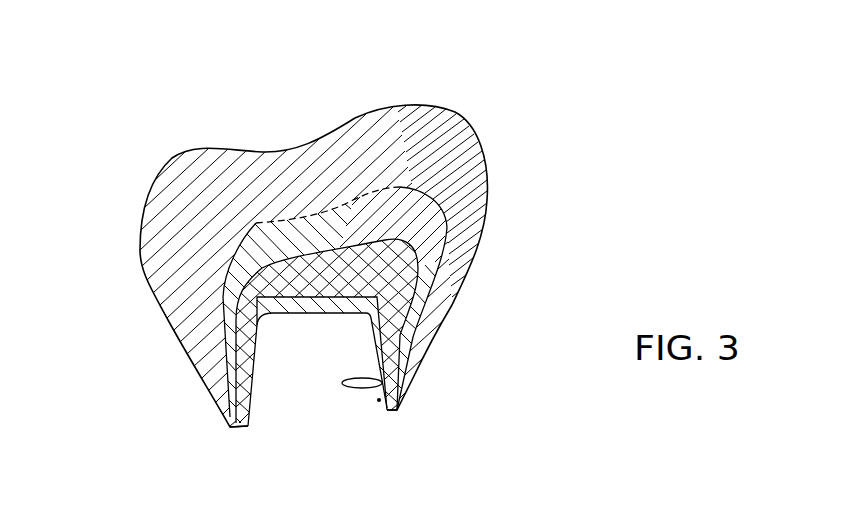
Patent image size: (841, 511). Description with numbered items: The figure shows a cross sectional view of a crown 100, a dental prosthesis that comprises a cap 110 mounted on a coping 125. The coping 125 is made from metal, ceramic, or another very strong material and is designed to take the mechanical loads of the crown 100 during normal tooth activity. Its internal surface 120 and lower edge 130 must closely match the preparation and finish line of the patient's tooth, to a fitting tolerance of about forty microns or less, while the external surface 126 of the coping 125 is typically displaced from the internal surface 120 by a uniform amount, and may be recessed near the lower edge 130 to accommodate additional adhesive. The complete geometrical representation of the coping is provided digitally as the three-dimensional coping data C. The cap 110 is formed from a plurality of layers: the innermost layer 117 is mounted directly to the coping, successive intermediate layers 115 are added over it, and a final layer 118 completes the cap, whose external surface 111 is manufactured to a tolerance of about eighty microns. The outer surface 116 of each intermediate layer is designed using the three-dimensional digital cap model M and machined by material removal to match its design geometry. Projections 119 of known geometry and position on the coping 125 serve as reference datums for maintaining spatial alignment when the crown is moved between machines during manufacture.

The crown 100 is at (661, 171).
The cap 110 is at (480, 140).
The external surface of the cap 111 is at (327, 138).
The intermediate layer 115 is at (410, 220).
The outer surface of intermediate layer 116 is at (293, 257).
The innermost layer 117 is at (425, 222).
The final layer 118 is at (388, 162).
The projections 119 is at (382, 385).
The internal surface 120 is at (379, 400).
The coping 125 is at (387, 335).
The external surface of the coping 126 is at (340, 288).
The lower edge 130 is at (398, 410).
The 3D data of the coping C is at (262, 403).
The 3D digital model of the cap M is at (121, 299).